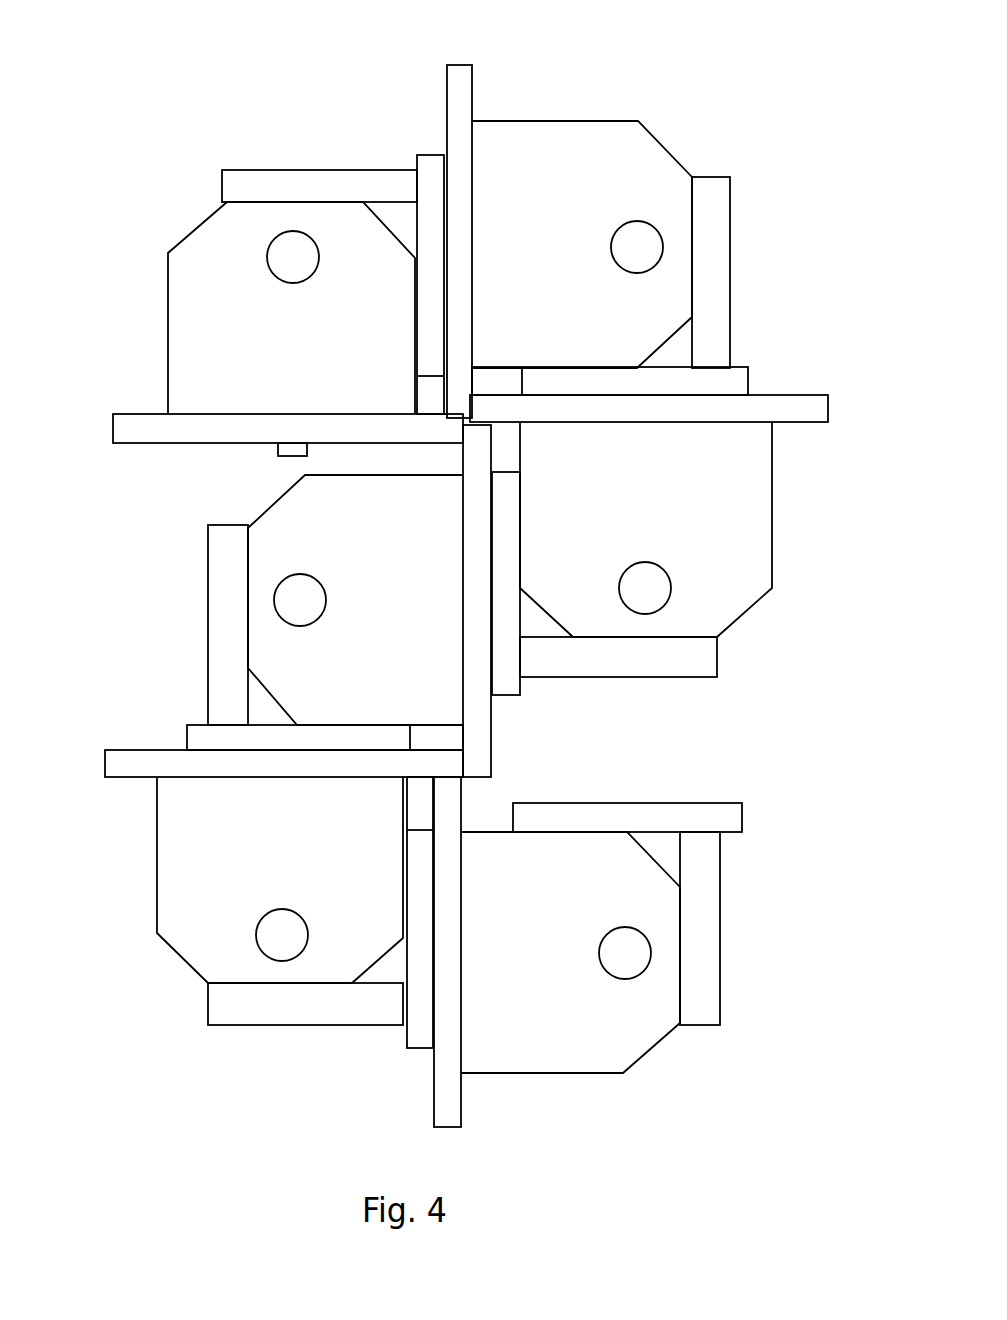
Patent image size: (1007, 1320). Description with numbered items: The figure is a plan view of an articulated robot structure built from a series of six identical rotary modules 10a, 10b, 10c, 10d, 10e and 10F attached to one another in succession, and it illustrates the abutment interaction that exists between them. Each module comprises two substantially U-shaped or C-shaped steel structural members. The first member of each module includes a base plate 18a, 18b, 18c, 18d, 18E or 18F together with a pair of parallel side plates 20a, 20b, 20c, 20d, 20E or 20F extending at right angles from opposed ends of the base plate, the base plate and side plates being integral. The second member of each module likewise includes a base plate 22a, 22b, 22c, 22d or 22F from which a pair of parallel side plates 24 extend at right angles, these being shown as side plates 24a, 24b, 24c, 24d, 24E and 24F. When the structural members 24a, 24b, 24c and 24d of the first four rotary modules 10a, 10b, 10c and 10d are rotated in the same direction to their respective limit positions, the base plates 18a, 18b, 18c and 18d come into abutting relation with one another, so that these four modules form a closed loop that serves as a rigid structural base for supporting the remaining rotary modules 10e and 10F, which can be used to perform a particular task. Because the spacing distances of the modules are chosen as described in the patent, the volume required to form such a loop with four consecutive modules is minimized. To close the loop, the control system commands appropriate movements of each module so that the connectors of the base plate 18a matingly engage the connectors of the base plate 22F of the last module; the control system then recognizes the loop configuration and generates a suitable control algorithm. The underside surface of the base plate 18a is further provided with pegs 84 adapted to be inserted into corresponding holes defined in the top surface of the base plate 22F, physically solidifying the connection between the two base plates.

The rotary module 10a is at (272, 233).
The rotary module 10b is at (672, 218).
The rotary module 10c is at (699, 583).
The rotary module 10d is at (242, 609).
The rotary module 10e is at (235, 967).
The rotary module 10F is at (671, 978).
The base plate 18a is at (143, 428).
The base plate 18b is at (465, 87).
The base plate 18c is at (825, 425).
The base plate 18d is at (477, 758).
The base plate 18E is at (130, 763).
The base plate 18F is at (443, 1097).
The side plate 20a is at (202, 267).
The side plate 20b is at (597, 138).
The side plate 20c is at (728, 537).
The side plate 20d is at (338, 513).
The side plate 20E is at (190, 862).
The side plate 20F is at (550, 1033).
The base plate 22a is at (432, 155).
The base plate 22b is at (738, 387).
The base plate 22c is at (505, 682).
The base plate 22d is at (205, 728).
The base plate 22F is at (715, 815).
The side plate 24 is at (410, 1042).
The structural member side plate 24a is at (257, 170).
The structural member side plate 24b is at (717, 213).
The structural member side plate 24c is at (700, 655).
The structural member side plate 24d is at (225, 633).
The side plate 24E is at (262, 1013).
The side plate 24F is at (703, 958).
The pegs 84 is at (308, 453).